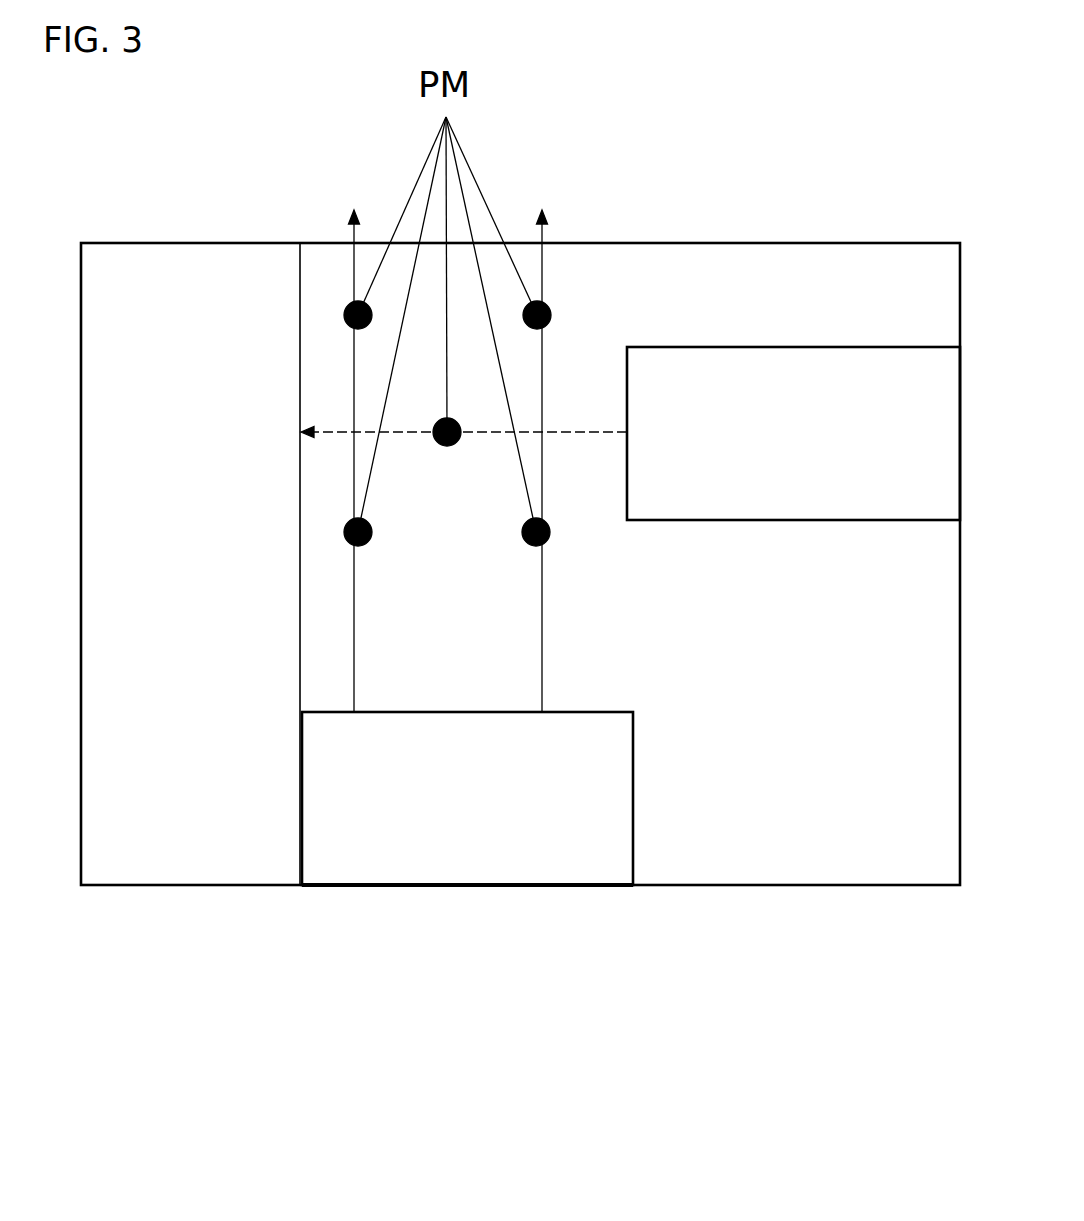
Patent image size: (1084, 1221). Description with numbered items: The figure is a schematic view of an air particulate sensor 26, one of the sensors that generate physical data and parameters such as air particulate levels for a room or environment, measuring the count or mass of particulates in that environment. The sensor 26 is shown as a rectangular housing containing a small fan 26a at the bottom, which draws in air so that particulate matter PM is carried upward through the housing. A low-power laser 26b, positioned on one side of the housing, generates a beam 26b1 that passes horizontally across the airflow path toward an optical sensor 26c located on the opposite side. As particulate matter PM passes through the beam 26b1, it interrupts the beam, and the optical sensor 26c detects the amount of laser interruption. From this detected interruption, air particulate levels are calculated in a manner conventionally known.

The sensor 26 is at (210, 217).
The fan 26a is at (562, 868).
The laser 26b is at (787, 488).
The beam 26b1 is at (578, 432).
The optical sensor 26c is at (179, 855).